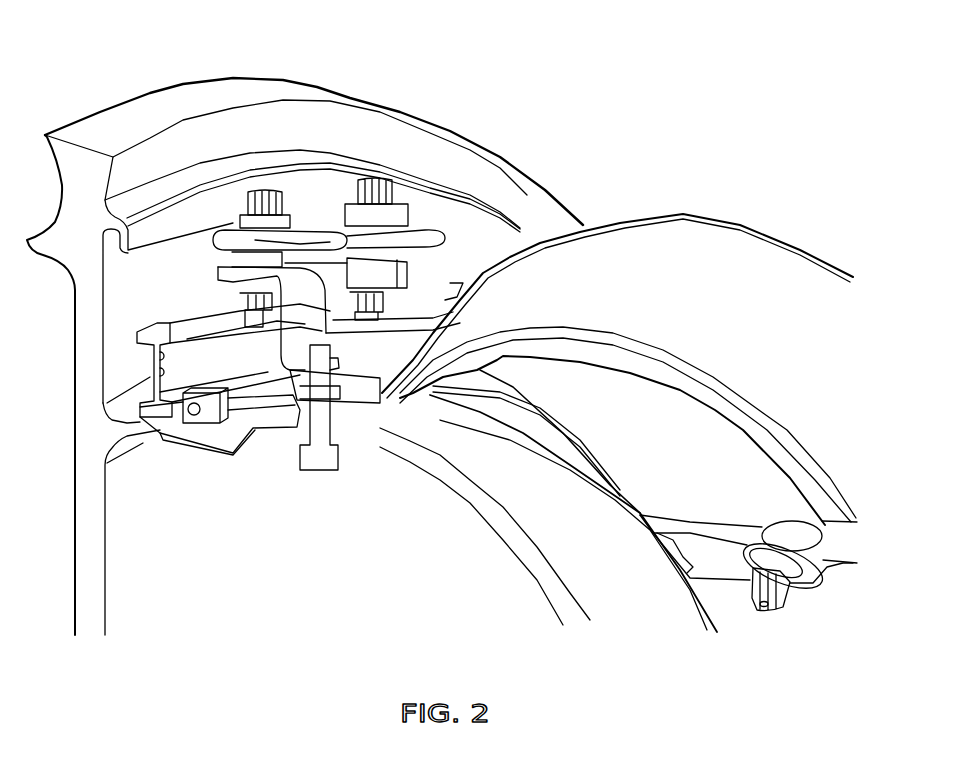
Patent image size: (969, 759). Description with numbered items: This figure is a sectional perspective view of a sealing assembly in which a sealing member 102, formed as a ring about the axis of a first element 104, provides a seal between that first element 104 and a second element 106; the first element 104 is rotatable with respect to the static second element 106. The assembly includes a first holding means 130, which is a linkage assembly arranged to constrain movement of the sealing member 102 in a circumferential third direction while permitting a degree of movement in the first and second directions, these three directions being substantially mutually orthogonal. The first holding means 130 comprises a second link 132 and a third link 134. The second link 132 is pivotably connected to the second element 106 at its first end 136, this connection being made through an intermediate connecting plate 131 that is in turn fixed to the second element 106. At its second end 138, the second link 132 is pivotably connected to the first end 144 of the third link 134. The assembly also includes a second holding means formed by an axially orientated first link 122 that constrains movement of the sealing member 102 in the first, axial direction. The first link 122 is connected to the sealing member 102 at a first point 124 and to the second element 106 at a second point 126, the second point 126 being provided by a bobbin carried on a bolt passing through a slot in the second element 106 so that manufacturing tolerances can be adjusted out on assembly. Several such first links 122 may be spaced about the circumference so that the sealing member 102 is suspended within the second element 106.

The sealing member 102 is at (162, 405).
The first element 104 is at (123, 123).
The second element 106 is at (420, 380).
The first link 122 is at (257, 413).
The first point 124 is at (190, 407).
The second point 126 is at (322, 467).
The first holding means 130 is at (304, 178).
The intermediate connecting plate 131 is at (240, 330).
The second link 132 is at (320, 227).
The third link 134 is at (380, 318).
The first end of the second link 136 is at (227, 248).
The second end of the second link 138 is at (405, 220).
The first end of the third link 144 is at (360, 283).